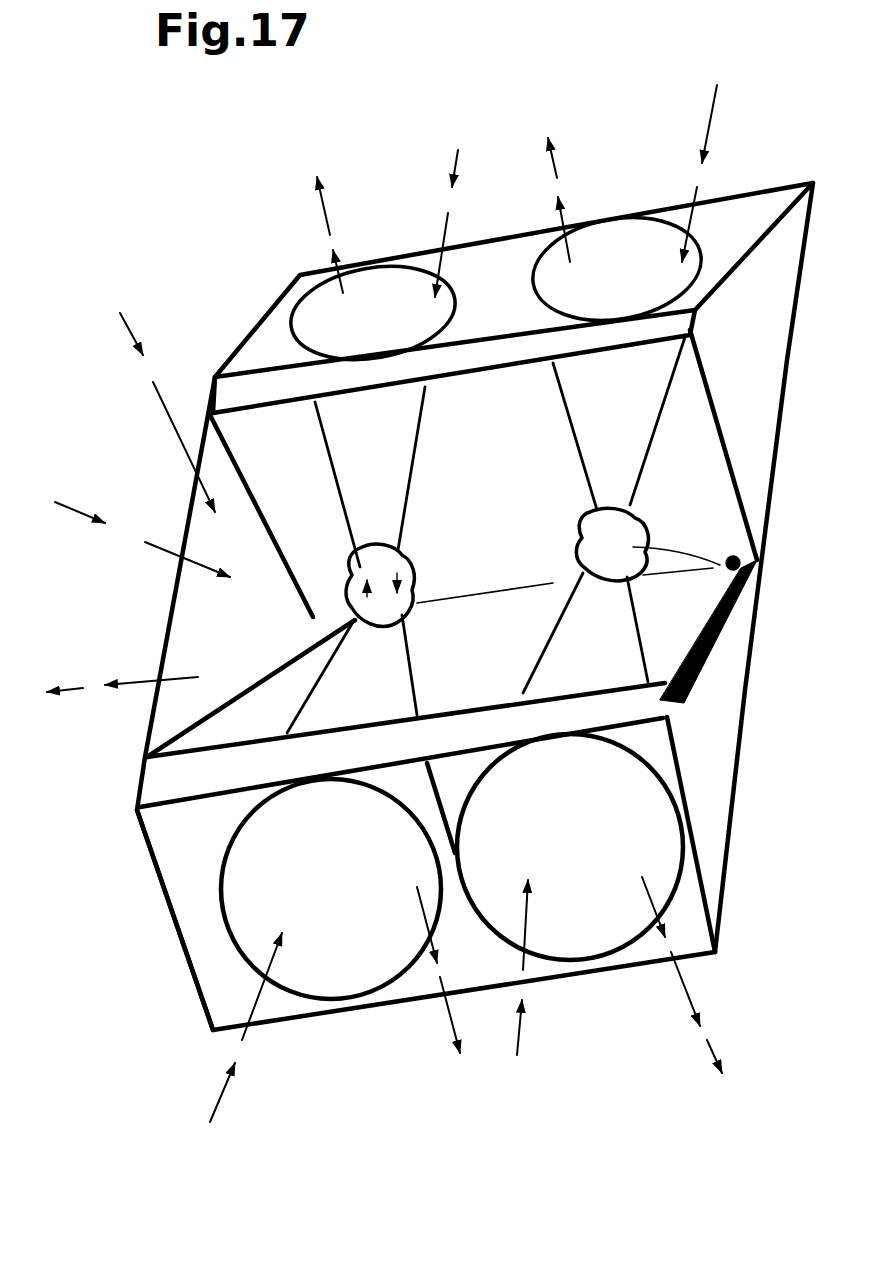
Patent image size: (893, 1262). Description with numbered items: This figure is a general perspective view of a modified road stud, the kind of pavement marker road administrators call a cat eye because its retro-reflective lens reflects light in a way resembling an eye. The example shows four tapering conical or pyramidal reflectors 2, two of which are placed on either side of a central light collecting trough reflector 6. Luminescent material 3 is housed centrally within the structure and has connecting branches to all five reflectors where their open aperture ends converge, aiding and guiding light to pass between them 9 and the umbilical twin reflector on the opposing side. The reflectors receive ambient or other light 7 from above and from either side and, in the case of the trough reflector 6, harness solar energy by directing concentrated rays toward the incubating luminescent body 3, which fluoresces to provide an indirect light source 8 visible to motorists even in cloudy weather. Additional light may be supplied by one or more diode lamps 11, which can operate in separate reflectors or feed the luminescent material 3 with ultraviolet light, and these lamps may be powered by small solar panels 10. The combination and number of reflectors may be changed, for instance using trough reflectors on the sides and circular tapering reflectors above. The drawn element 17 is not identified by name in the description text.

The rollers 2 is at (250, 883).
The nozzle 3 is at (733, 575).
The housing 6 is at (698, 498).
The inflow air 7 is at (718, 125).
The outflow air 8 is at (312, 212).
The nozzle 9 is at (350, 613).
The partition plate 10 is at (167, 780).
The pivot 11 is at (740, 558).
The side wall 17 is at (217, 967).